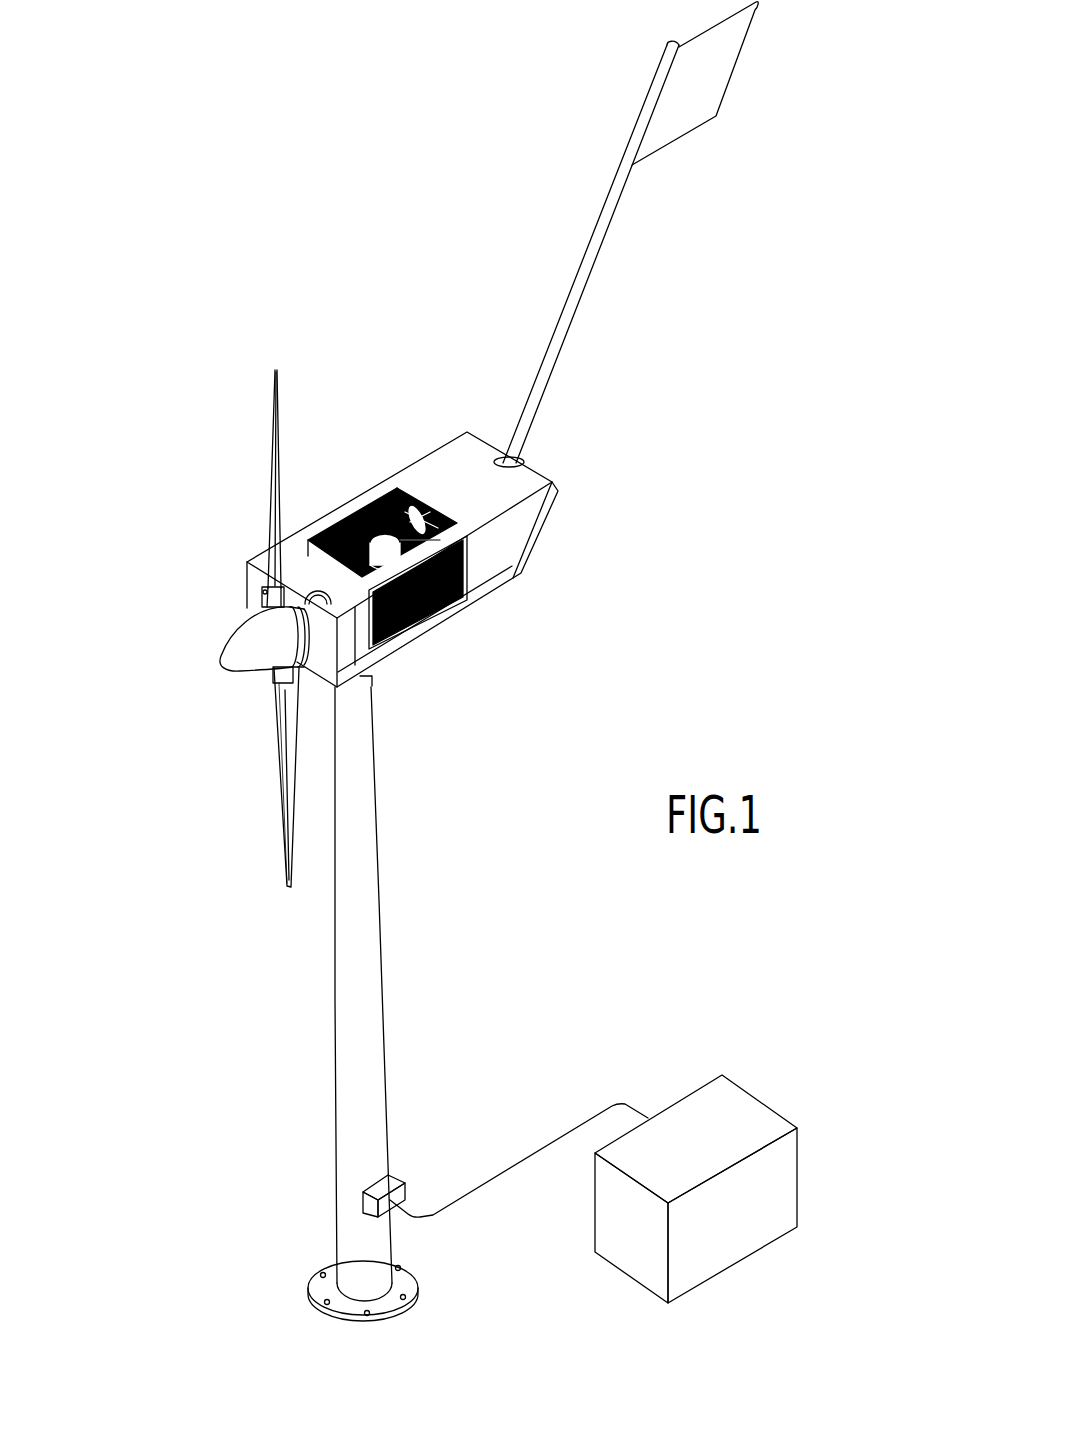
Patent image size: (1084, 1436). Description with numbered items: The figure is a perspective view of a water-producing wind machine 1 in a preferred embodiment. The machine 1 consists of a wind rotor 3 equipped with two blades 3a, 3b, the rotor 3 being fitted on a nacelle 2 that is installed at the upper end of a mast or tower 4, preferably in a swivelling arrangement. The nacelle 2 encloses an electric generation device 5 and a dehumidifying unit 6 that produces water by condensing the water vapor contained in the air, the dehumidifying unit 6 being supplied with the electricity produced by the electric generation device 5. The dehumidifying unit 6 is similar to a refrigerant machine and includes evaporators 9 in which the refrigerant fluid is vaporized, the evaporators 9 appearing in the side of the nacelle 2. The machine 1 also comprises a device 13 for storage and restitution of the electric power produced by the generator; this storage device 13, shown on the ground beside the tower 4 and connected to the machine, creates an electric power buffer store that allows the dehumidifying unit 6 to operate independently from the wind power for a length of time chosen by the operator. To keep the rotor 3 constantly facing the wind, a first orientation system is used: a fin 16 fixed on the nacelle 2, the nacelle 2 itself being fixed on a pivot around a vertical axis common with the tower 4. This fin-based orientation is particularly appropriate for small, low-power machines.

The machine 1 is at (176, 532).
The nacelle 2 is at (527, 478).
The wind rotor 3 is at (240, 656).
The blade 3a is at (268, 420).
The blade 3b is at (290, 788).
The tower 4 is at (358, 823).
The electric generation device 5 is at (308, 578).
The dehumidifying unit 6 is at (382, 503).
The evaporators 9 is at (447, 607).
The storage device 13 is at (723, 1107).
The fin 16 is at (682, 110).